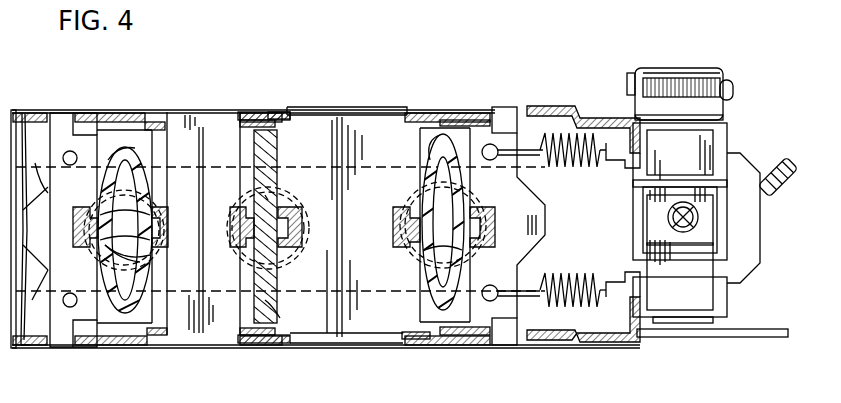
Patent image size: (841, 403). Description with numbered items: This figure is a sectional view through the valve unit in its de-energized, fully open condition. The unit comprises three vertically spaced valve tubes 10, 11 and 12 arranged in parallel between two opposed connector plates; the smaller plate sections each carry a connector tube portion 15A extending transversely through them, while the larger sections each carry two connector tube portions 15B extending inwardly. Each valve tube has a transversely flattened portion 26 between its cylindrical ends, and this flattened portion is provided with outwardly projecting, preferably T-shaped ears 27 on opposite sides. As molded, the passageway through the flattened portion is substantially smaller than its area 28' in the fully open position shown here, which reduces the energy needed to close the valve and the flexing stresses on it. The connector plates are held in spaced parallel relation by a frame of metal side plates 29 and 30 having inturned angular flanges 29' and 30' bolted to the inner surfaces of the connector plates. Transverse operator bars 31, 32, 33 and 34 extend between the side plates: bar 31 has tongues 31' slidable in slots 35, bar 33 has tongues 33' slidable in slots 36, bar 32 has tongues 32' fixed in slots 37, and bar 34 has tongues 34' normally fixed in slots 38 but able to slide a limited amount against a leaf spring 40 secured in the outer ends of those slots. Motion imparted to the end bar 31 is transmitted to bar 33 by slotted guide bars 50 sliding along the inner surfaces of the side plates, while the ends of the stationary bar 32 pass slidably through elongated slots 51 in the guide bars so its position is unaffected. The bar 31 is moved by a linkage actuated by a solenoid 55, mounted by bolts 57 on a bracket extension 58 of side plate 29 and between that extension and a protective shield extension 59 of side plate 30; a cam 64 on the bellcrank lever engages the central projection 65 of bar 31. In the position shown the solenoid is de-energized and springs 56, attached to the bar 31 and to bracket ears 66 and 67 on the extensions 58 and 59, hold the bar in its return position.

The valve tube 10 is at (412, 258).
The valve tube 11 is at (244, 266).
The valve tube 12 is at (108, 300).
The connector tube portion 15A is at (142, 190).
The connector tube portions 15B is at (455, 258).
The transversely flattened portion 26 is at (125, 165).
The outwardly projecting ears 27 is at (78, 240).
The passageway area in fully open position 28' is at (157, 268).
The side plate 29 is at (266, 202).
The inturned angular flange 29' is at (56, 183).
The side plate 30 is at (287, 357).
The inturned angular flange 30' is at (56, 283).
The operator bar 31 is at (516, 225).
The tongues 31' is at (516, 218).
The operator bar 32 is at (353, 227).
The tongues 32' is at (347, 227).
The operator bar 33 is at (207, 224).
The tongues 33' is at (207, 223).
The operator bar 34 is at (39, 228).
The tongues 34' is at (73, 227).
The slots 35 is at (430, 113).
The slots 36 is at (112, 113).
The slots 37 is at (298, 112).
The slots 38 is at (32, 112).
The leaf spring 40 is at (37, 142).
The slotted guide bars 50 is at (152, 121).
The elongated slots 51 is at (455, 120).
The solenoid 55 is at (732, 118).
The springs 56 is at (572, 133).
The bolts 57 is at (733, 85).
The bracket extension 58 is at (597, 117).
The protective shield extension 59 is at (720, 338).
The cam 64 is at (552, 160).
The central projection 65 is at (545, 230).
The bracket ear 66 is at (648, 78).
The bracket ear 67 is at (628, 340).